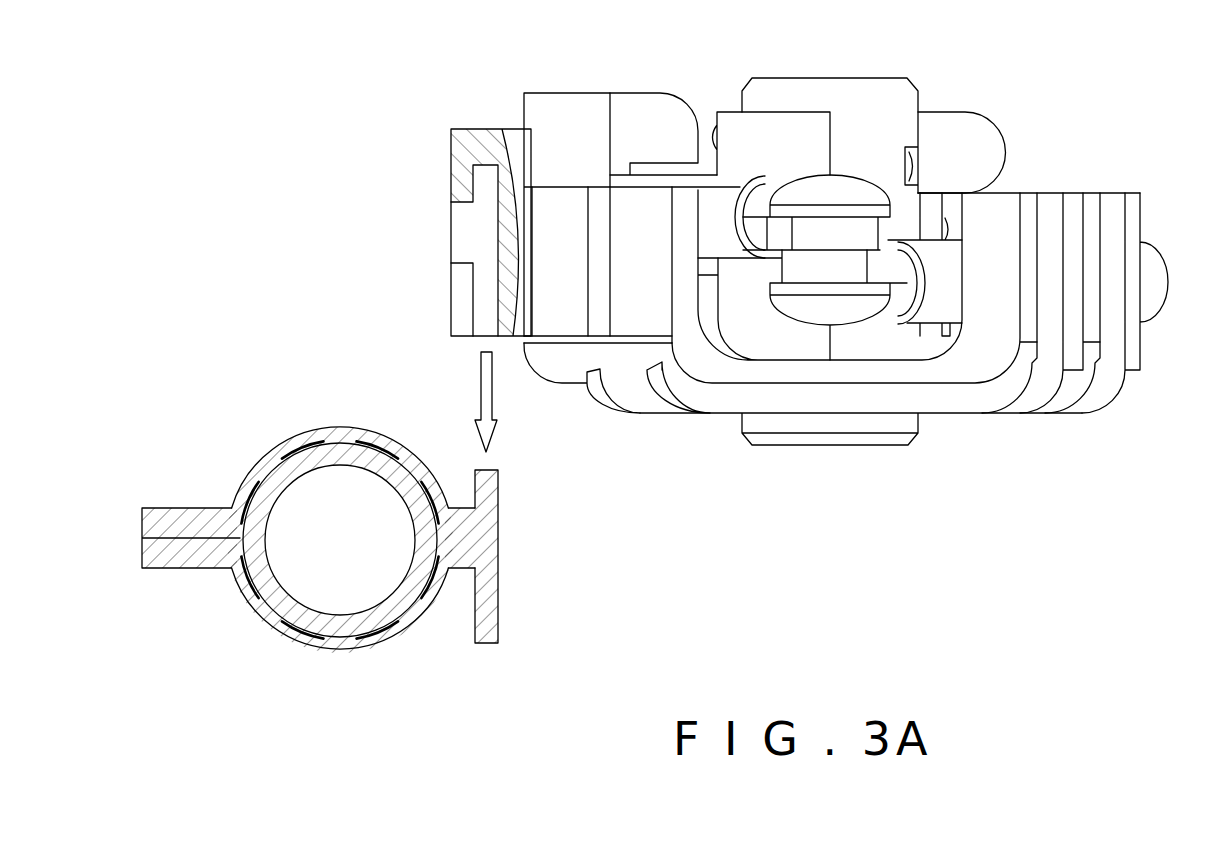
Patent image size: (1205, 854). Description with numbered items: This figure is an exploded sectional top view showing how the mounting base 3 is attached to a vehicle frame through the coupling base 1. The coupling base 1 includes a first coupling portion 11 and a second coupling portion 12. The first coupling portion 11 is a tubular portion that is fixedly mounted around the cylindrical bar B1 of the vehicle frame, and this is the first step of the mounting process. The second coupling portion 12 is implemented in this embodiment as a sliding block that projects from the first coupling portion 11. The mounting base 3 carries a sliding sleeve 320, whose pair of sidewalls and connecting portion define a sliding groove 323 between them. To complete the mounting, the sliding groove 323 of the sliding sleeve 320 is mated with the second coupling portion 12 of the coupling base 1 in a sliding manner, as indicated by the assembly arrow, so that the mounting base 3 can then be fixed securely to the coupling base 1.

The mounting base 3 is at (709, 442).
The sliding sleeve 320 is at (441, 183).
The sliding groove 323 is at (488, 183).
The coupling base 1 is at (320, 577).
The first coupling portion 11 is at (278, 455).
The cylindrical bar B1 is at (265, 495).
The second coupling portion 12 is at (488, 628).